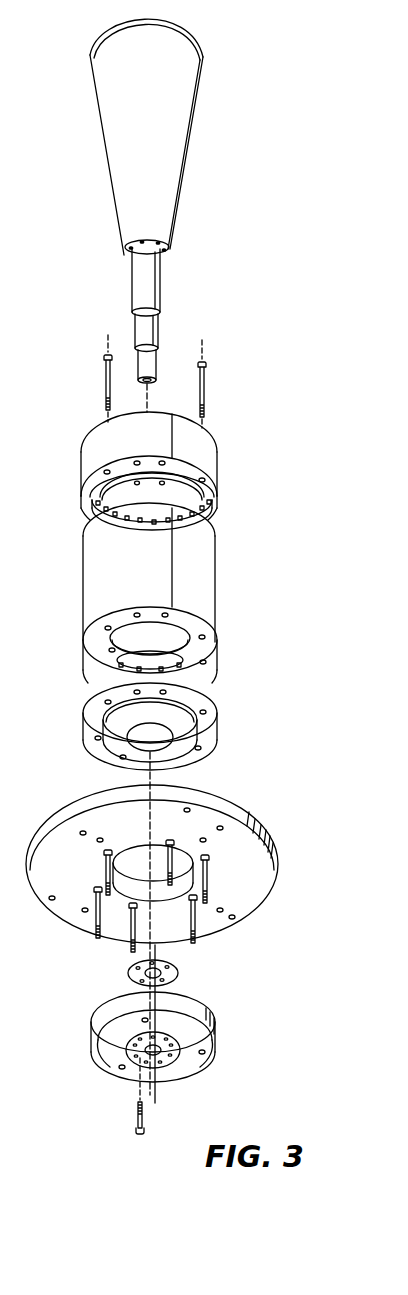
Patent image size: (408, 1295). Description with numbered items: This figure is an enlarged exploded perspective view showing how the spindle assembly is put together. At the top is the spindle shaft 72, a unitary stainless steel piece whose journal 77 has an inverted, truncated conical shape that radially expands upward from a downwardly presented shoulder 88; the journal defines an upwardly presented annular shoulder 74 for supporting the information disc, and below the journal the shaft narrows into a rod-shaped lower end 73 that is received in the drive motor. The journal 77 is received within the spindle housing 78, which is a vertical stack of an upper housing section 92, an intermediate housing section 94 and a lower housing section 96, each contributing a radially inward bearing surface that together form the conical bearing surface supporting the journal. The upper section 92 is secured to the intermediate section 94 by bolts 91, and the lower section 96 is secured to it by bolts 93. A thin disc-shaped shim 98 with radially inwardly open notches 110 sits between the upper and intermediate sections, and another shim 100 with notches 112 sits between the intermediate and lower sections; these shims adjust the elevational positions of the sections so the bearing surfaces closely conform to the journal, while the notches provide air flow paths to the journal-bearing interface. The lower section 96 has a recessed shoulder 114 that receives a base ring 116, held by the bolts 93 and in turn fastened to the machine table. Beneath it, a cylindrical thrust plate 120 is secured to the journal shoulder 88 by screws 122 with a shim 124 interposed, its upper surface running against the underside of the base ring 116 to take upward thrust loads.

The spindle shaft 72 is at (192, 149).
The annular shoulder 74 is at (187, 33).
The journal 77 is at (120, 167).
The shoulder 88 is at (172, 248).
The lower end 73 is at (160, 303).
The bolts 91 is at (102, 377).
The spindle housing 78 is at (64, 572).
The upper housing section 92 is at (207, 453).
The shim 98 is at (210, 513).
The notches 110 is at (170, 489).
The intermediate housing section 94 is at (207, 596).
The shim 100 is at (205, 668).
The notches 112 is at (143, 655).
The lower housing section 96 is at (207, 695).
The recessed shoulder 114 is at (203, 737).
The base ring 116 is at (268, 846).
The bolts 93 is at (158, 858).
The shim 124 is at (173, 982).
The thrust plate 120 is at (213, 1037).
The screws 122 is at (143, 1118).